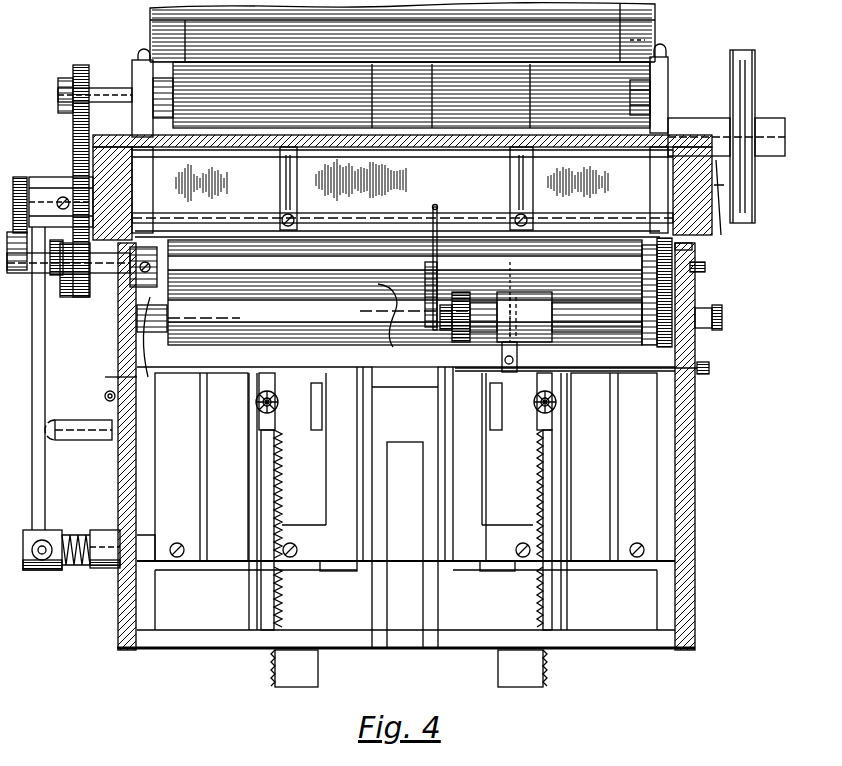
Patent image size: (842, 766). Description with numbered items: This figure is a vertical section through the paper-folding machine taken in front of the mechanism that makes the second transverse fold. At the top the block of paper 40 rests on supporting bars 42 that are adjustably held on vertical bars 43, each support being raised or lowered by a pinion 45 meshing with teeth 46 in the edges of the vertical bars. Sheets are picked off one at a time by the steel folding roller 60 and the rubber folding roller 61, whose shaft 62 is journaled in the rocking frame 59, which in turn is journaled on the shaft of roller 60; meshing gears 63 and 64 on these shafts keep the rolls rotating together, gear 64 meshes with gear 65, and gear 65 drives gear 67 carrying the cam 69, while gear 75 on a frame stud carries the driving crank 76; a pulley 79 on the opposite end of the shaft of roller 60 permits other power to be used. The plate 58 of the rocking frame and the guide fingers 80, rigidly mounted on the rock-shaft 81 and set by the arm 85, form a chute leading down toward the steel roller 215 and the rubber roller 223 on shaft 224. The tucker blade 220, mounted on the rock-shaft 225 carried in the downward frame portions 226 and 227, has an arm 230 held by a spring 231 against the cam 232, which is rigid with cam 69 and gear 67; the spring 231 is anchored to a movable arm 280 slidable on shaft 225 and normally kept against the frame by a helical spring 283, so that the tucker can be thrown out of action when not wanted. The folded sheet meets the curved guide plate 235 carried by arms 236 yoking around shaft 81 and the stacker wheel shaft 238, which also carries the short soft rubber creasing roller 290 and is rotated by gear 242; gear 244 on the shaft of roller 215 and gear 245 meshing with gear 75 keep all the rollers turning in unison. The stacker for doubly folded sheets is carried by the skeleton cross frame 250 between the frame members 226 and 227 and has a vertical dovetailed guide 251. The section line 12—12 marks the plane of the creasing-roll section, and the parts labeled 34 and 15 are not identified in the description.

The block of paper 40 is at (402, 32).
The paper roll housing 34 is at (648, 22).
The folding roller 60 is at (450, 150).
The rocking frame 59 is at (138, 66).
The folding roller 61 is at (657, 60).
The shaft of upper roll 62 is at (642, 95).
The gear 63 is at (78, 66).
The pinion 64 is at (75, 137).
The gear 65 is at (75, 157).
The gear 75 is at (75, 178).
The driving crank 76 is at (18, 178).
The pulley 79 is at (752, 92).
The arm 85 is at (728, 205).
The guide fingers 80 is at (512, 175).
The printed record 15 is at (262, 152).
The rock-shaft 81 is at (610, 217).
The plate 58 is at (437, 254).
The roller 215 is at (386, 292).
The rubber roller 223 is at (389, 323).
The cam 232 is at (36, 280).
The cam 69 is at (53, 291).
The gear 67 is at (78, 300).
The gear 245 is at (127, 340).
The shaft 224 is at (137, 378).
The arm 230 is at (45, 402).
The spring 231 is at (78, 440).
The movable arm 280 is at (117, 477).
The rock-shaft 225 is at (72, 535).
The helical spring 283 is at (73, 570).
The downward frame portion 226 is at (121, 604).
The downward frame portion 227 is at (695, 455).
The gear 244 is at (698, 267).
The gear 242 is at (697, 308).
The stacker wheel shaft 238 is at (695, 338).
The soft rubber roller 290 is at (496, 317).
The arms 236 is at (432, 268).
The curved guide plate 235 is at (400, 350).
The section line 12 is at (514, 261).
The tucker blade 220 is at (464, 547).
The vertical bars 43 is at (408, 530).
The supporting bars 42 is at (311, 399).
The pinions 45 is at (556, 400).
The teeth 46 is at (556, 455).
The skeleton cross frame 250 is at (405, 507).
The vertical dovetailed guide 251 is at (405, 545).